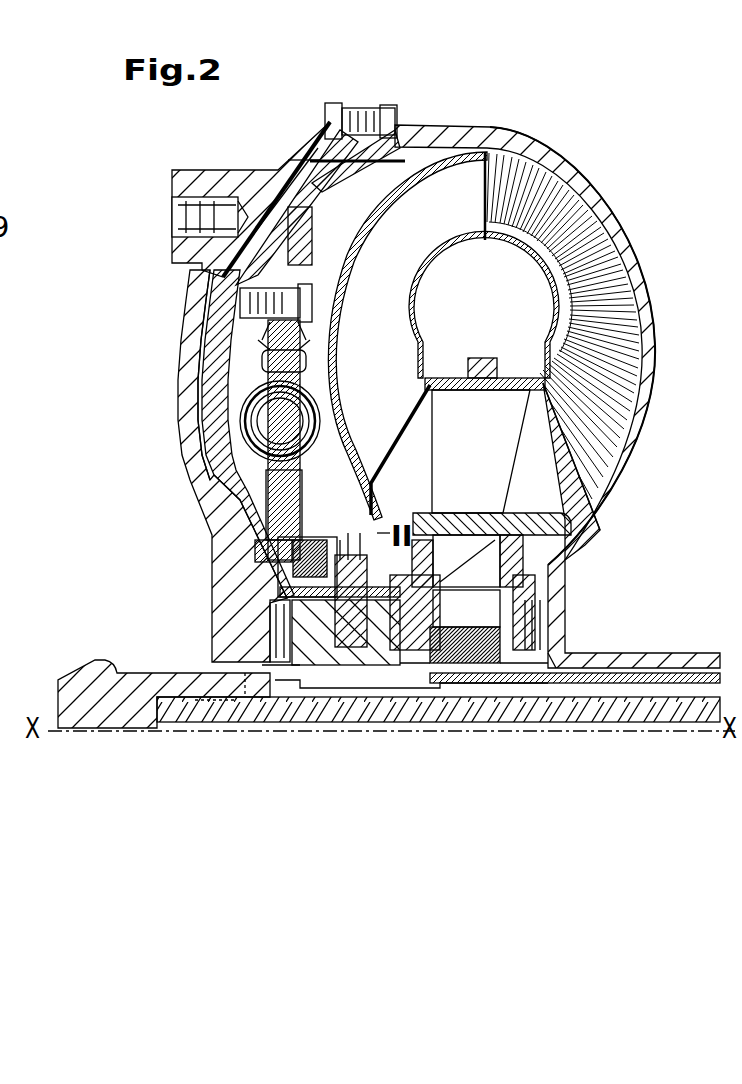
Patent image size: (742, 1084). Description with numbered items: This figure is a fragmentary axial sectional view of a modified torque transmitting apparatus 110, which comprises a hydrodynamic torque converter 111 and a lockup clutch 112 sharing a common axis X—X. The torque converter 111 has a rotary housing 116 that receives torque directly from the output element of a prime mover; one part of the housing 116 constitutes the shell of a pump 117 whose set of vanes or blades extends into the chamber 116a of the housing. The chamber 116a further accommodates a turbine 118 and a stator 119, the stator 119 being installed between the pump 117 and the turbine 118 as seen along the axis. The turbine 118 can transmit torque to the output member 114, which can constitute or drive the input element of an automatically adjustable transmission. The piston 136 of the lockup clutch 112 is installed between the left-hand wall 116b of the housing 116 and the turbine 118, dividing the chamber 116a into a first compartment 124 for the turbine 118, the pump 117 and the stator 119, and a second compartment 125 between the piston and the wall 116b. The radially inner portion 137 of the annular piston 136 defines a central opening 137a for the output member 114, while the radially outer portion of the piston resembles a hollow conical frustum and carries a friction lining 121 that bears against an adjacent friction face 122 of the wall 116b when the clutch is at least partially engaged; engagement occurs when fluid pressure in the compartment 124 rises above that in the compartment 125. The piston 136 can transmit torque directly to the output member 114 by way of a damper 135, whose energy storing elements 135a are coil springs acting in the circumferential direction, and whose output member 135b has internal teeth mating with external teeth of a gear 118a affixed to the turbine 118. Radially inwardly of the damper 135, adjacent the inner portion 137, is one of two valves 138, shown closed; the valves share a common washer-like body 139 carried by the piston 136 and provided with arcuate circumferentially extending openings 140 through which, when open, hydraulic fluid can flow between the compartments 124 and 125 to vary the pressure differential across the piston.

The torque transmitting apparatus 110 is at (587, 161).
The hydrodynamic torque converter 111 is at (523, 293).
The lockup clutch 112 is at (272, 207).
The output member 114 is at (325, 663).
The rotary housing 116 is at (355, 104).
The chamber 116a is at (560, 453).
The left-hand wall 116b is at (178, 322).
The pump 117 is at (630, 347).
The turbine 118 is at (455, 203).
The gear 118a is at (330, 507).
The stator 119 is at (500, 472).
The friction lining 121 is at (190, 268).
The friction face 122 is at (295, 202).
The first compartment 124 is at (356, 222).
The second compartment 125 is at (197, 365).
The damper 135 is at (238, 423).
The energy storing elements 135a is at (340, 348).
The output member of the damper 135b is at (308, 462).
The piston 136 is at (215, 478).
The radially inner portion 137 is at (270, 573).
The central opening 137a is at (360, 605).
The valve 138 is at (247, 547).
The washer-like body 139 is at (263, 675).
The arcuate openings 140 is at (240, 560).